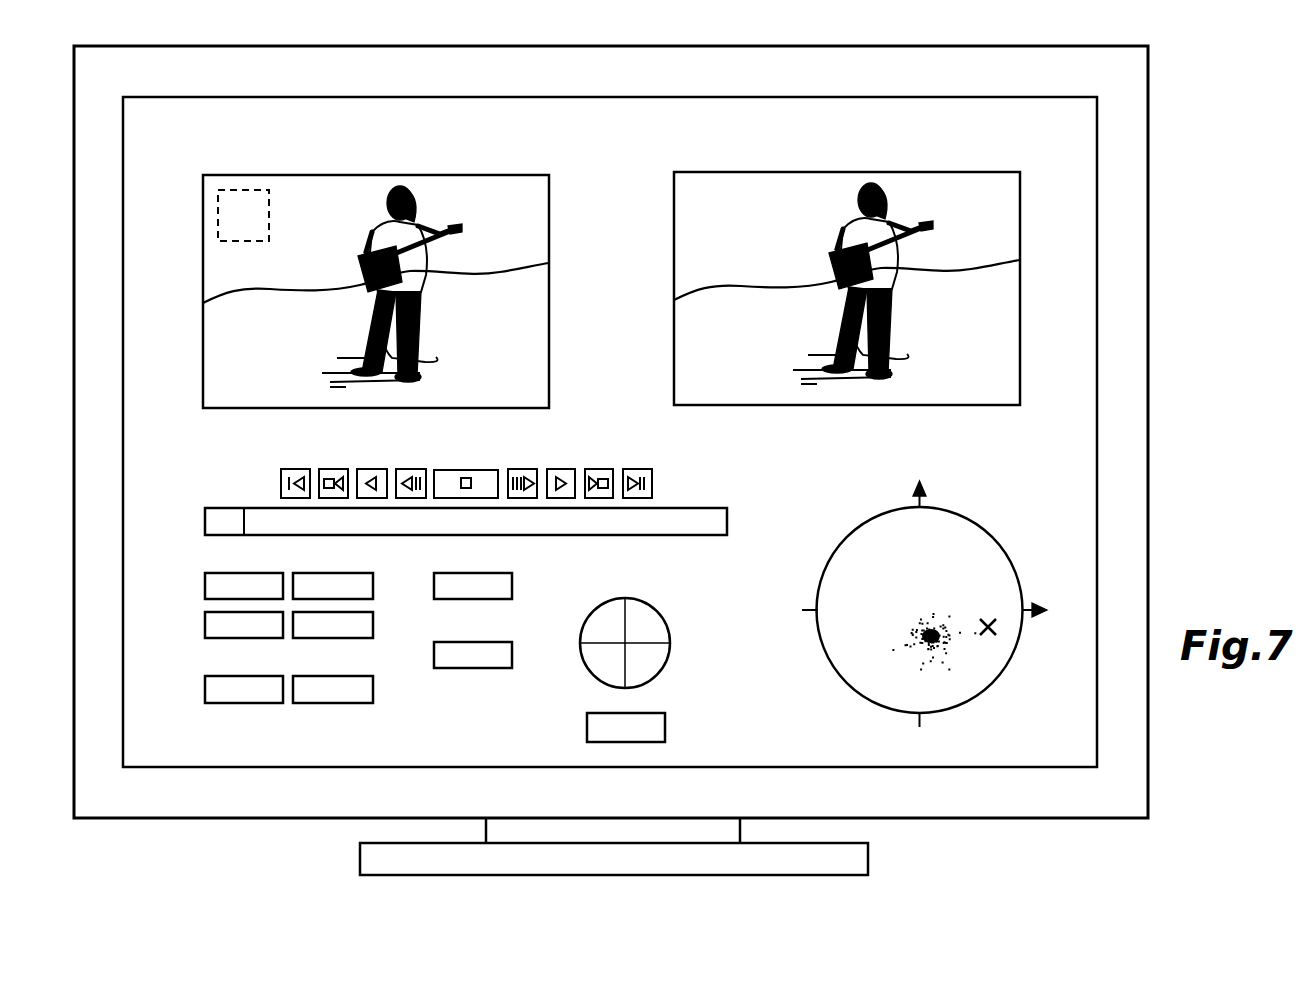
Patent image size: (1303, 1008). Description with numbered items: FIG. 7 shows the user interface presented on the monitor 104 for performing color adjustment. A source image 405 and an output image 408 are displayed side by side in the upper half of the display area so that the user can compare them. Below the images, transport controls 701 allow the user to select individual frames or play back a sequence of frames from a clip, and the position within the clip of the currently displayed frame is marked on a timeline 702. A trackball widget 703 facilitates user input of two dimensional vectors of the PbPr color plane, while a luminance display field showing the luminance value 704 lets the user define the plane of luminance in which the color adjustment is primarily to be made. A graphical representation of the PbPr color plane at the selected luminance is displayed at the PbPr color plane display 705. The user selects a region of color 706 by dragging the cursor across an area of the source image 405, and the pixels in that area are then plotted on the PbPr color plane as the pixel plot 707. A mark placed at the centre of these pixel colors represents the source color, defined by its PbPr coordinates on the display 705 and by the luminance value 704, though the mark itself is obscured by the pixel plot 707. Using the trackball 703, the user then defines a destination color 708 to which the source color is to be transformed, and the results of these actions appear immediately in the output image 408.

The monitor 104 is at (1128, 274).
The source image 405 is at (508, 213).
The output image 408 is at (764, 212).
The transport controls 701 is at (636, 470).
The timeline 702 is at (260, 520).
The trackball widget 703 is at (604, 620).
The luminance value 704 is at (660, 727).
The PbPr color plane display 705 is at (975, 524).
The region of color 706 is at (241, 200).
The pixel plot 707 is at (912, 640).
The destination color 708 is at (985, 638).